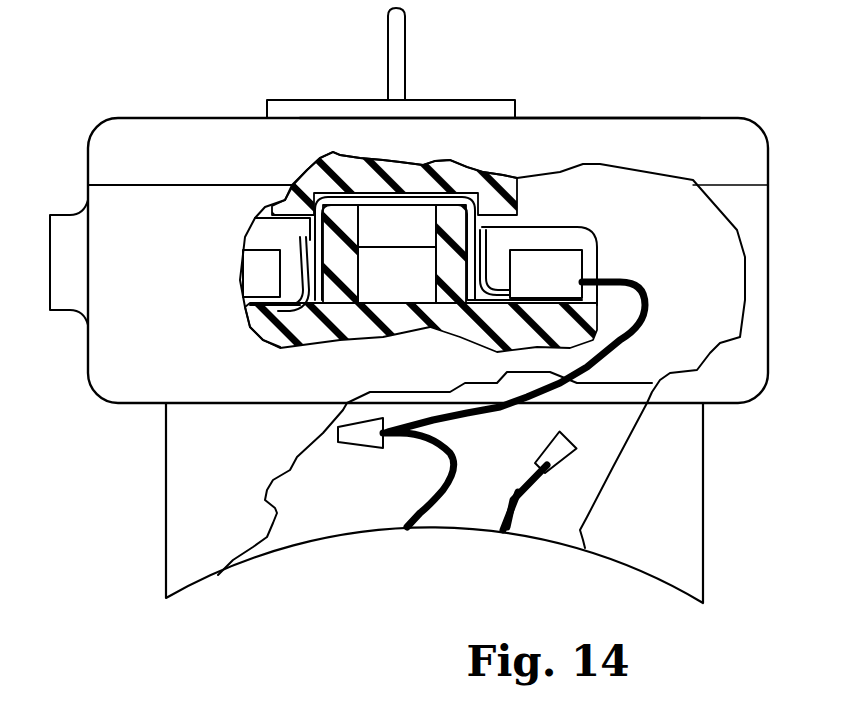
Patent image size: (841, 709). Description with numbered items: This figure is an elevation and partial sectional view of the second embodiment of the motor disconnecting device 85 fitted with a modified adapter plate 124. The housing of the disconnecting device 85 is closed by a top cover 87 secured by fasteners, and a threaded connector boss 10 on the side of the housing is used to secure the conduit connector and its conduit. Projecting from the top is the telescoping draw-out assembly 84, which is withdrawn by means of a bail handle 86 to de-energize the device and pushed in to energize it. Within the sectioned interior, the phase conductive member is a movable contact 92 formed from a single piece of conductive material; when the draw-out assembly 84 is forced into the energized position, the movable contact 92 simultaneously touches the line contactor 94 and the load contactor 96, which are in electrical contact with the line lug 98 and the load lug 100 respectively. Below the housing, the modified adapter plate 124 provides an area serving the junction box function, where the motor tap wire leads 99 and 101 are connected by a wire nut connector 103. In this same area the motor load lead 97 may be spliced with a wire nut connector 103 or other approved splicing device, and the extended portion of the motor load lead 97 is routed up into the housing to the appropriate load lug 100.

The threaded connector boss 10 is at (72, 315).
The draw-out assembly 84 is at (330, 100).
The disconnecting device 85 is at (768, 343).
The bail handle 86 is at (405, 68).
The top cover 87 is at (681, 118).
The movable contact 92 is at (373, 197).
The line contactor 94 is at (285, 303).
The load contactor 96 is at (490, 303).
The motor load lead 97 is at (425, 497).
The line lug 98 is at (250, 283).
The motor tap wire lead 99 is at (517, 513).
The load lug 100 is at (528, 250).
The motor tap wire lead 101 is at (507, 490).
The wire nut connector 103 is at (355, 448).
The modified adapter plate 124 is at (703, 515).